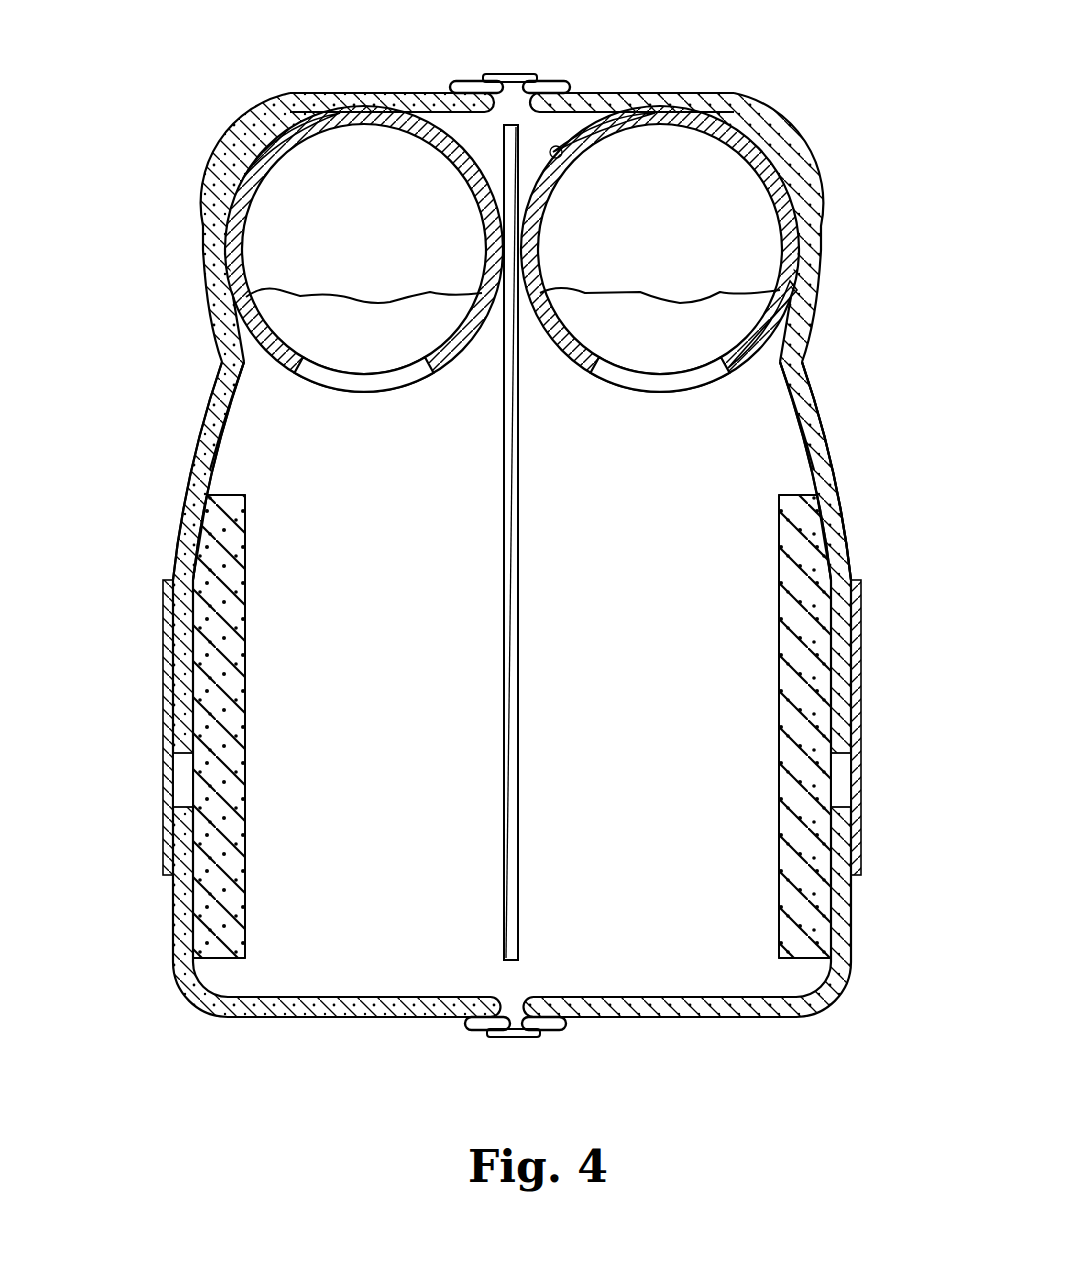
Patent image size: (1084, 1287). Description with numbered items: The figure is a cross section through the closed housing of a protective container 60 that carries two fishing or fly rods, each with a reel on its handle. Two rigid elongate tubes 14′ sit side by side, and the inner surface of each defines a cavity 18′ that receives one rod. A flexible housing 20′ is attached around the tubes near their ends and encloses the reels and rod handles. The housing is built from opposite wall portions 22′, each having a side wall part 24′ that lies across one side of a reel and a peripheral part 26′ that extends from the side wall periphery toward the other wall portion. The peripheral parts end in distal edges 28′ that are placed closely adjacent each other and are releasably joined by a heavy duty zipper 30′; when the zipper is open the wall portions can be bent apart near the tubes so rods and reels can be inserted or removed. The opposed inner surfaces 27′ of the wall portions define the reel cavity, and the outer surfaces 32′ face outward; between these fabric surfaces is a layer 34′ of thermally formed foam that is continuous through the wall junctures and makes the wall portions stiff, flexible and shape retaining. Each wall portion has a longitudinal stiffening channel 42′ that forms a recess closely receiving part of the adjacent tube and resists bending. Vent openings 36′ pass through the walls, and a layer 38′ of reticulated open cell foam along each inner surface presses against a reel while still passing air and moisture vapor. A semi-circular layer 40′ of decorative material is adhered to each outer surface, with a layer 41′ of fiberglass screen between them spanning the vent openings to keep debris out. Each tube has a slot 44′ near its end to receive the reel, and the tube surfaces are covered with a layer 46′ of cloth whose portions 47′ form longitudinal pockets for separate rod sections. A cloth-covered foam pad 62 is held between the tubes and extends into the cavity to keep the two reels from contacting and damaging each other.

The protective container 60 is at (697, 57).
The rigid elongate tube 14′ is at (243, 158).
The cavity 18′ is at (535, 244).
The flexible housing 20′ is at (834, 417).
The opposite wall portion 22′ is at (198, 432).
The side wall part 24′ is at (190, 505).
The peripheral part 26′ is at (375, 100).
The inner surface 27′ is at (212, 467).
The distal edge 28′ is at (528, 78).
The heavy duty zipper 30′ is at (531, 73).
The outer surface 32′ is at (178, 932).
The layer of thermally formed foam 34′ is at (177, 540).
The vent opening 36′ is at (238, 790).
The layer of reticulated open cell foam 38′ is at (240, 660).
The layer of decorative material 40′ is at (164, 615).
The layer of fiberglass screen material 41′ is at (180, 760).
The longitudinal stiffening channel 42′ is at (221, 360).
The slot 44′ is at (387, 397).
The layer of cloth 46′ is at (443, 158).
The pocket-forming portion 47′ is at (340, 293).
The pad 62 is at (514, 692).